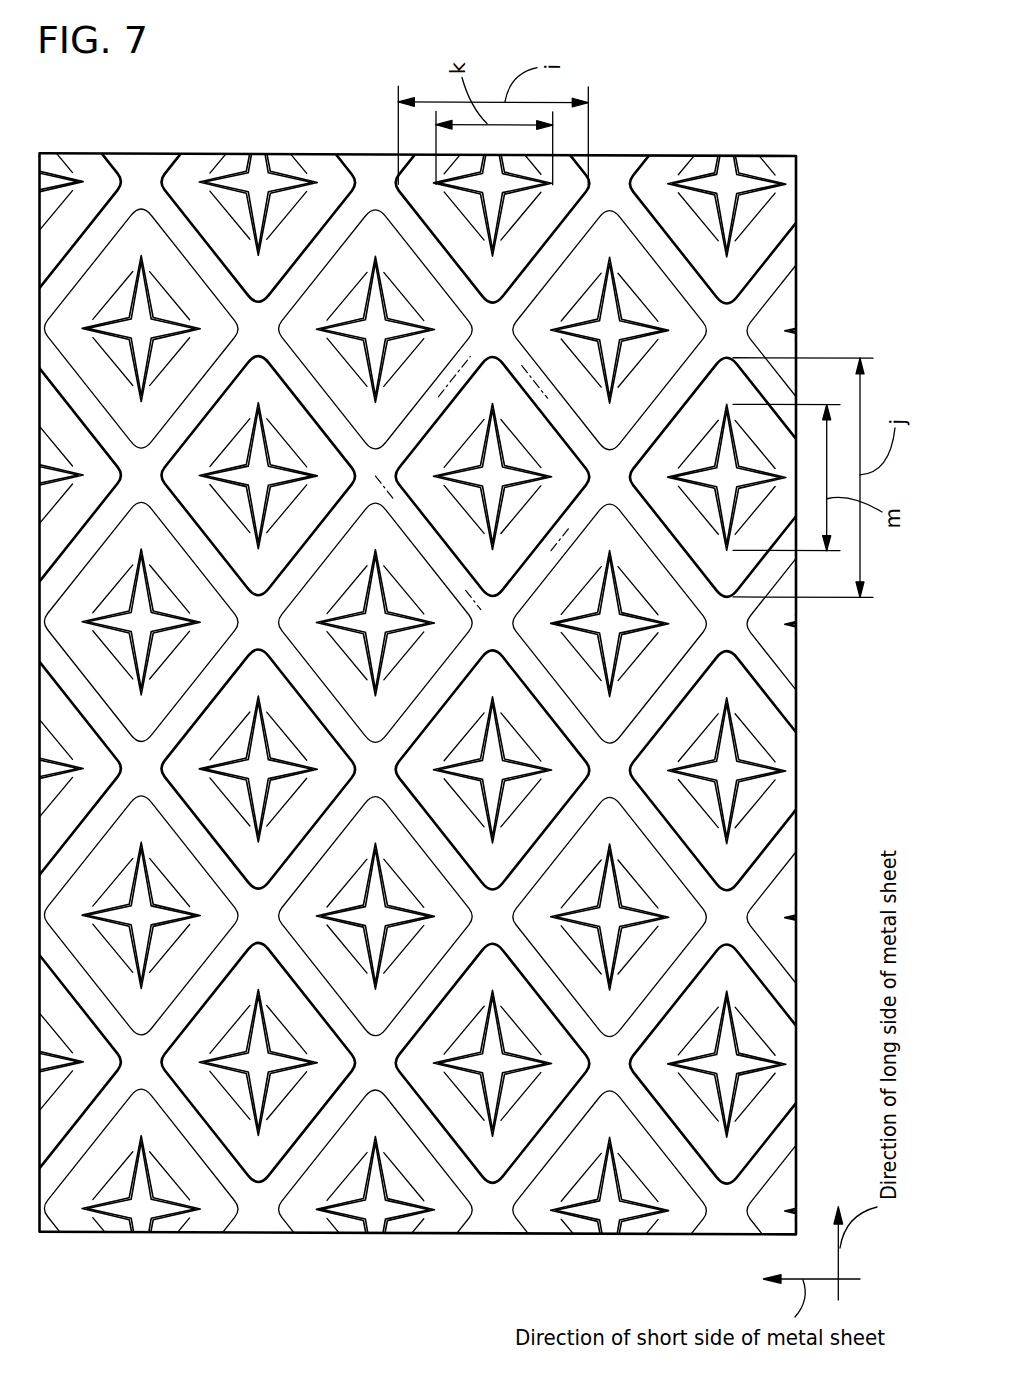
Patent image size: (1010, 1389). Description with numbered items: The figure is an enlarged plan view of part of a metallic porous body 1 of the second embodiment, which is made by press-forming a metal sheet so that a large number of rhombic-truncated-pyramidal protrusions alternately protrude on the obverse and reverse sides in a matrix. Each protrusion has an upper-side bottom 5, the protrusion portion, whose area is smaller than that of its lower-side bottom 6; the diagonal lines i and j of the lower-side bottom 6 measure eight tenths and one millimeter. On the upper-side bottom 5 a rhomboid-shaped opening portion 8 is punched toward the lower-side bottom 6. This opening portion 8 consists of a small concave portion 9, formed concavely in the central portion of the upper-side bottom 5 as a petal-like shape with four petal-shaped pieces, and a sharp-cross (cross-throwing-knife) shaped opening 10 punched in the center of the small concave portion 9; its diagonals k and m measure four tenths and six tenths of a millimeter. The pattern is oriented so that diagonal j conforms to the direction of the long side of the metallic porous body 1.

The metallic porous body 1 is at (125, 132).
The upper-side bottom 5 is at (530, 408).
The lower-side bottom 6 is at (407, 512).
The opening portion 8 is at (522, 509).
The small concave portion 9 is at (507, 517).
The opening 10 is at (515, 463).